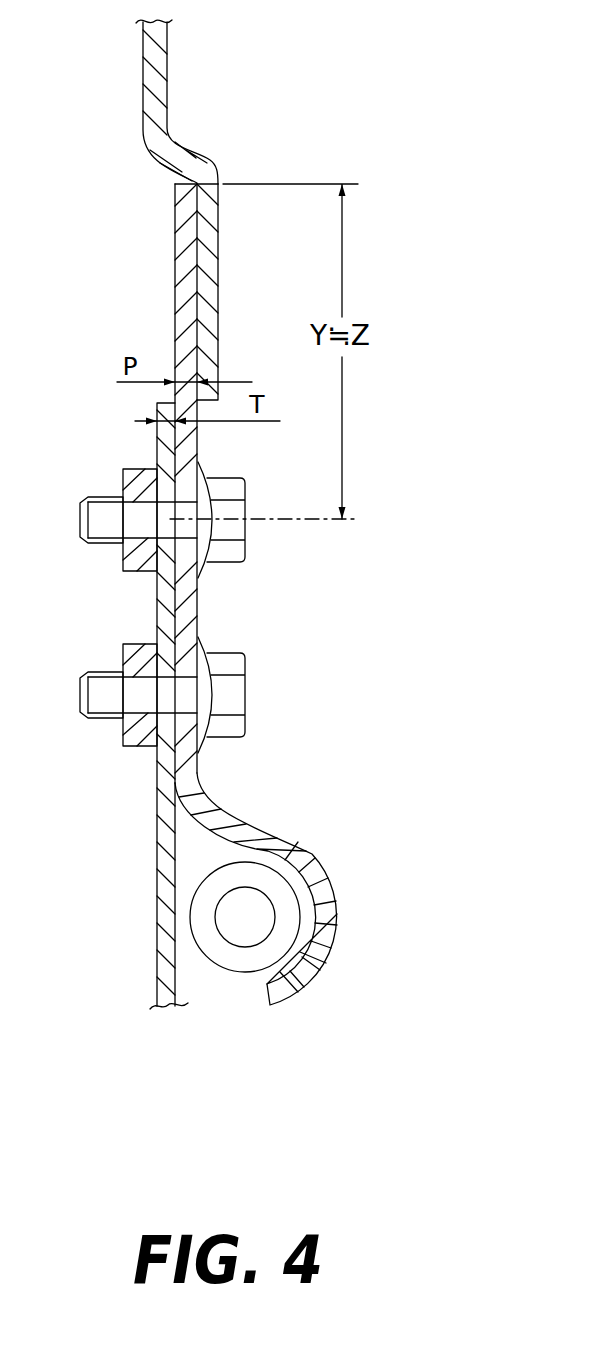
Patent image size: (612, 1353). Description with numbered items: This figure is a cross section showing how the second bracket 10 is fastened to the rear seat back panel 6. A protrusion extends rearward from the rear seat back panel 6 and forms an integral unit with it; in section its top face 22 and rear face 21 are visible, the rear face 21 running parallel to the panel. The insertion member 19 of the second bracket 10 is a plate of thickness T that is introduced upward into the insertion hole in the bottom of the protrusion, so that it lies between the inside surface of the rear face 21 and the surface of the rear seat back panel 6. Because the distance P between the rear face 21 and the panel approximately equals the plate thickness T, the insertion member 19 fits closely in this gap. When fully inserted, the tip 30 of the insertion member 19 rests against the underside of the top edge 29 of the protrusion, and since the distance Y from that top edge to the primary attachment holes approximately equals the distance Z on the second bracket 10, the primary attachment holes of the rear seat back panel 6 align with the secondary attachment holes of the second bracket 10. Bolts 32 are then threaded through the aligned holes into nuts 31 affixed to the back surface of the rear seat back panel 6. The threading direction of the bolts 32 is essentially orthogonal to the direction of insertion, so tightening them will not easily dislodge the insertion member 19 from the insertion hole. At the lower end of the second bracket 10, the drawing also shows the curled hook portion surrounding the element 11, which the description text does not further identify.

The rear seat back panel 6 is at (183, 75).
The top face 22 is at (183, 155).
The top edge 29 is at (217, 167).
The tip 30 is at (177, 181).
The insertion member 19 is at (182, 250).
The rear face 21 is at (213, 283).
The nuts 31 is at (140, 483).
The bolts 32 is at (240, 700).
The second bracket 10 is at (310, 832).
The bushing 11 is at (245, 932).